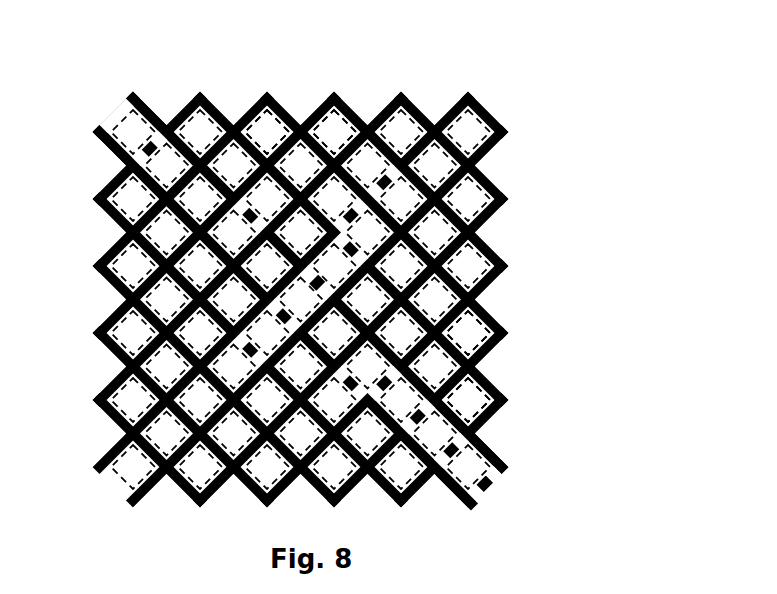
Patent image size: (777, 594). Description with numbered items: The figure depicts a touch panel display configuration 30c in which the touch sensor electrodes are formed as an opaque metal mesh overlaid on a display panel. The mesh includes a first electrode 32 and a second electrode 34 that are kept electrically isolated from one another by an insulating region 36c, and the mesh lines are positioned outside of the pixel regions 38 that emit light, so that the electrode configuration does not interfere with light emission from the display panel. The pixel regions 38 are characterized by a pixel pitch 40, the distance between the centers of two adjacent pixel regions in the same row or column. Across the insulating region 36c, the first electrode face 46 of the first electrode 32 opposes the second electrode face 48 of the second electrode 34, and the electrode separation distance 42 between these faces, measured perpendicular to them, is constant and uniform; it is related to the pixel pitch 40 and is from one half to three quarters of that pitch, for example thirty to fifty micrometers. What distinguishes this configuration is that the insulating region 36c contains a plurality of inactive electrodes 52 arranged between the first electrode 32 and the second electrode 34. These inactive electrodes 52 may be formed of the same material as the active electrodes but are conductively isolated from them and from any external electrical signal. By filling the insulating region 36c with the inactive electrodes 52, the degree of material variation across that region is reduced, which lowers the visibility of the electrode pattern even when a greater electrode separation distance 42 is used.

The touch panel display configuration 30c is at (634, 170).
The first electrode 32 is at (511, 194).
The second electrode 34 is at (106, 492).
The insulating region 36c is at (137, 158).
The pixel regions 38 is at (105, 327).
The pixel pitch 40 is at (336, 128).
The electrode separation distance 42 is at (148, 75).
The first electrode face 46 is at (500, 473).
The second electrode face 48 is at (478, 505).
The inactive electrodes 52 is at (452, 473).